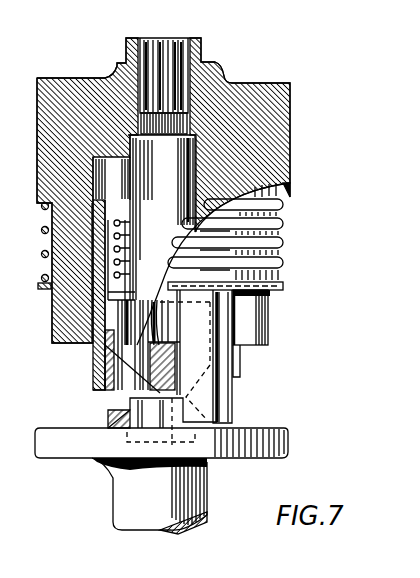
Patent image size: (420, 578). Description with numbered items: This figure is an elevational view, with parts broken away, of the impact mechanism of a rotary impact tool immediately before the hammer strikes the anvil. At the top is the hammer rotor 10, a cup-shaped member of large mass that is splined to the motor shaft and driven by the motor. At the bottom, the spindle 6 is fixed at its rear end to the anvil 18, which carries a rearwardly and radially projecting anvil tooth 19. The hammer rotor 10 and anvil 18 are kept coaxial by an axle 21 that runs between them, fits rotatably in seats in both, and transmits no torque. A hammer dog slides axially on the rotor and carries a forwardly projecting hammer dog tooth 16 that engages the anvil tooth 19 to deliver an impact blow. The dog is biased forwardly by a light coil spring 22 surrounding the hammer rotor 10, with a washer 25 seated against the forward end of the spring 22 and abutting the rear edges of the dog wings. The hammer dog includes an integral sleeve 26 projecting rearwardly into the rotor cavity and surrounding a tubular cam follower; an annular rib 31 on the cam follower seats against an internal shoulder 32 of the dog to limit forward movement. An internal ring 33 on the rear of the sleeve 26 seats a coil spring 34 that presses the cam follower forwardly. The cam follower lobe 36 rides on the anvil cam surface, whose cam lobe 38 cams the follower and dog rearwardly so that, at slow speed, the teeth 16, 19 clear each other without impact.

The hammer rotor 10 is at (278, 158).
The axle 21 is at (178, 170).
The internal ring 33 is at (158, 189).
The coil spring 34 is at (118, 252).
The integral sleeve 26 is at (105, 232).
The annular rib 31 is at (123, 295).
The internal shoulder 32 is at (110, 322).
The light coil spring 22 is at (280, 253).
The washer 25 is at (278, 287).
The cam follower lobe 36 is at (233, 376).
The hammer dog tooth 16 is at (230, 413).
The cam lobe 38 is at (130, 398).
The anvil tooth 19 is at (157, 420).
The anvil 18 is at (280, 456).
The spindle 6 is at (207, 489).